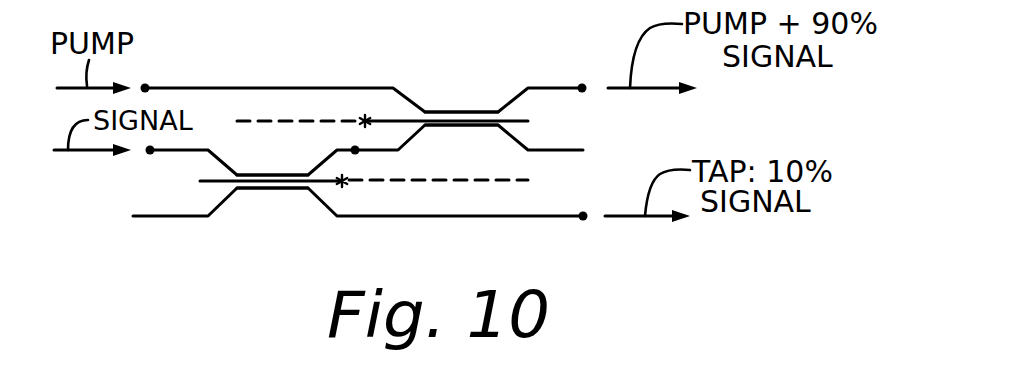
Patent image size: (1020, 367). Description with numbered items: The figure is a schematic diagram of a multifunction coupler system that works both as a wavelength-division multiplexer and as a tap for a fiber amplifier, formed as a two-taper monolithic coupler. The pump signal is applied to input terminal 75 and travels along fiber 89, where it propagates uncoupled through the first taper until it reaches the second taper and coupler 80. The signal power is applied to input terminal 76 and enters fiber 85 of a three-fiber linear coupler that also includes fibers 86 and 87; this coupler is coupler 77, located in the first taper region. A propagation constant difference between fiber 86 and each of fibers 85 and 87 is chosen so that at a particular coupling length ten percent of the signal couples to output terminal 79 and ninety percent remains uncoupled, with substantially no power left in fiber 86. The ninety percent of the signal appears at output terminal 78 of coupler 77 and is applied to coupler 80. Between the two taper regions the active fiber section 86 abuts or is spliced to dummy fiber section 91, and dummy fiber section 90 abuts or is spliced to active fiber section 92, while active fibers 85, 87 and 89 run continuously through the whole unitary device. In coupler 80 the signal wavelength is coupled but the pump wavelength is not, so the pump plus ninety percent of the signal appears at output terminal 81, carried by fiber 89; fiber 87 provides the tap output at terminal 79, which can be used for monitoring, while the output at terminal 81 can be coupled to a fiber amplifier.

The input terminal 75 is at (145, 88).
The input terminal 76 is at (150, 152).
The coupler 77 is at (270, 174).
The output terminal 78 is at (356, 152).
The output terminal 79 is at (583, 219).
The coupler 80 is at (458, 111).
The output terminal 81 is at (581, 86).
The fiber 85 is at (208, 149).
The active fiber section 86 is at (210, 181).
The fiber 87 is at (163, 218).
The fiber 89 is at (350, 87).
The dummy fiber section 90 is at (306, 121).
The dummy fiber section 91 is at (524, 180).
The active fiber section 92 is at (524, 121).